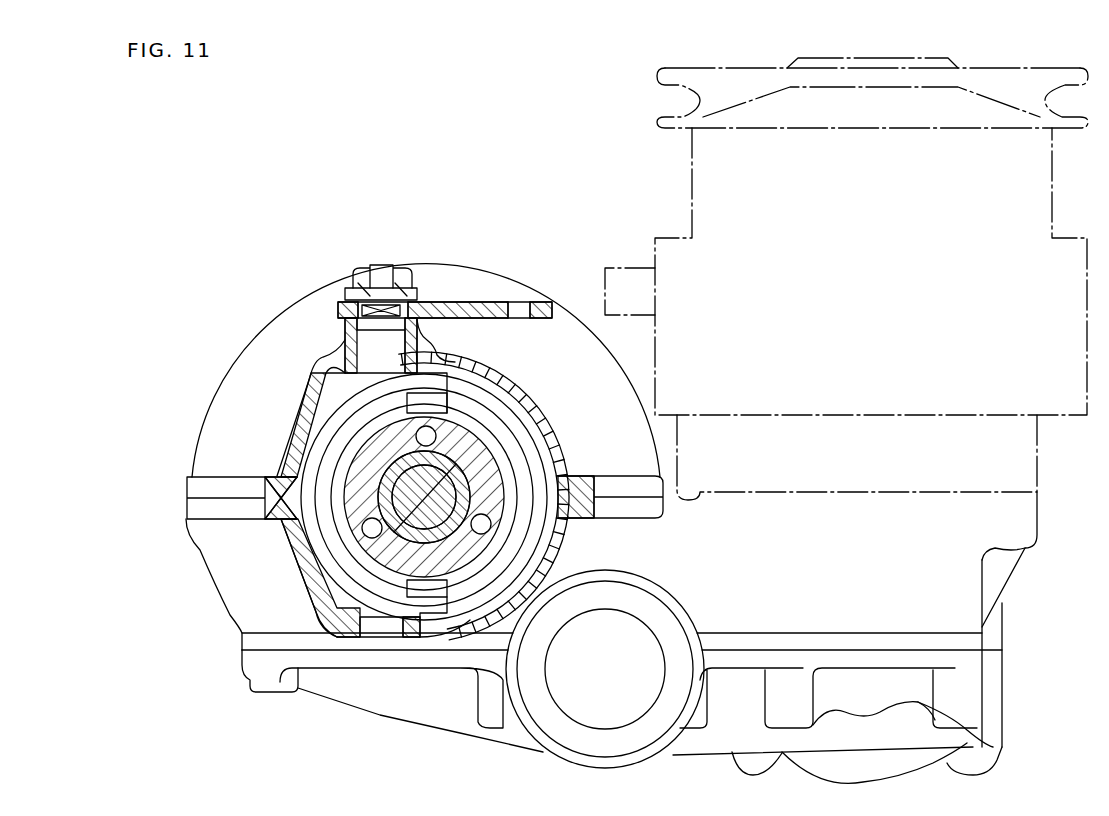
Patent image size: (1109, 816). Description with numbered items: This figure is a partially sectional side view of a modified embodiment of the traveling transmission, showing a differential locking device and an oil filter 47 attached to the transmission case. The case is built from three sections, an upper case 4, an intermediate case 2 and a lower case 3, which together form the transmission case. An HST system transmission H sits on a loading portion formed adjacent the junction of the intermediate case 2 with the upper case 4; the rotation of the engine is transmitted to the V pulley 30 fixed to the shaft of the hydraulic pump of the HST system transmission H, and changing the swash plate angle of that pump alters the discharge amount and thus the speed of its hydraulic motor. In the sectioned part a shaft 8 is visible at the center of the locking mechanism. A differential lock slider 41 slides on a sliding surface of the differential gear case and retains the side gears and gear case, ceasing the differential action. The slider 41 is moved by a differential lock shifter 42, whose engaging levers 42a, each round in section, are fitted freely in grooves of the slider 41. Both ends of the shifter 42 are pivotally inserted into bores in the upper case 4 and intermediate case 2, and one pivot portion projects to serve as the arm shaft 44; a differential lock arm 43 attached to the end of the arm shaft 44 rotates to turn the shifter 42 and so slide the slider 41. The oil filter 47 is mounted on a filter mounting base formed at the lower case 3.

The intermediate case 2 is at (207, 565).
The lower case 3 is at (430, 722).
The upper case 4 is at (224, 395).
The shaft 8 is at (442, 480).
The V pulley 30 is at (683, 68).
The differential lock slider 41 is at (520, 517).
The differential lock shifter 42 is at (325, 445).
The engaging levers 42a is at (435, 573).
The differential lock arm 43 is at (545, 300).
The arm shaft 44 is at (404, 272).
The oil filter 47 is at (573, 748).
The HST system transmission H is at (688, 210).